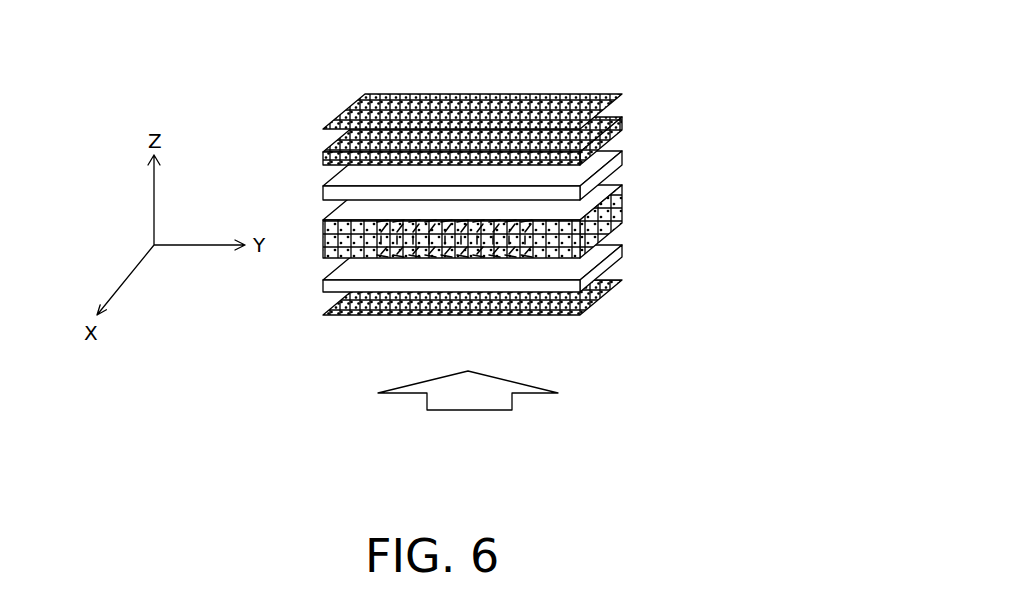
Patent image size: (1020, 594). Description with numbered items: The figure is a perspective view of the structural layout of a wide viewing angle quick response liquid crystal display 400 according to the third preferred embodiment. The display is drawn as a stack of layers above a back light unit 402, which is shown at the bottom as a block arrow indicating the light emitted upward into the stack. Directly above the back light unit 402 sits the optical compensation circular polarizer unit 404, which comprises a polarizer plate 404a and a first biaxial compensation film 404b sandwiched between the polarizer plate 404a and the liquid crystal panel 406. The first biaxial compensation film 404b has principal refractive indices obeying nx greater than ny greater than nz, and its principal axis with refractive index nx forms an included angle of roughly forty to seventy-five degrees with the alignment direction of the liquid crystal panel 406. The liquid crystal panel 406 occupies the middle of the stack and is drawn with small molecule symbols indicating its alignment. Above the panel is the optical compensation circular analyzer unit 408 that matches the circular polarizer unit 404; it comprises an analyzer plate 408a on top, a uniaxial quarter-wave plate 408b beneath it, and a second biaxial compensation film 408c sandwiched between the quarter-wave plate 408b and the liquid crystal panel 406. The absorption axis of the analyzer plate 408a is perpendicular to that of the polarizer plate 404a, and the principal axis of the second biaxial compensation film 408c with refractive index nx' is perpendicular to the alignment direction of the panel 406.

The wide viewing angle quick response liquid crystal display 400 is at (613, 445).
The back light unit 402 is at (505, 402).
The optical compensation circular polarizer unit 404 is at (578, 288).
The polarizer plate 404a is at (615, 291).
The first biaxial compensation film 404b is at (620, 256).
The liquid crystal panel 406 is at (612, 215).
The optical compensation circular analyzer unit 408 is at (578, 137).
The analyzer plate 408a is at (620, 94).
The uniaxial quarter-wave plate 408b is at (620, 124).
The second biaxial compensation film 408c is at (620, 160).